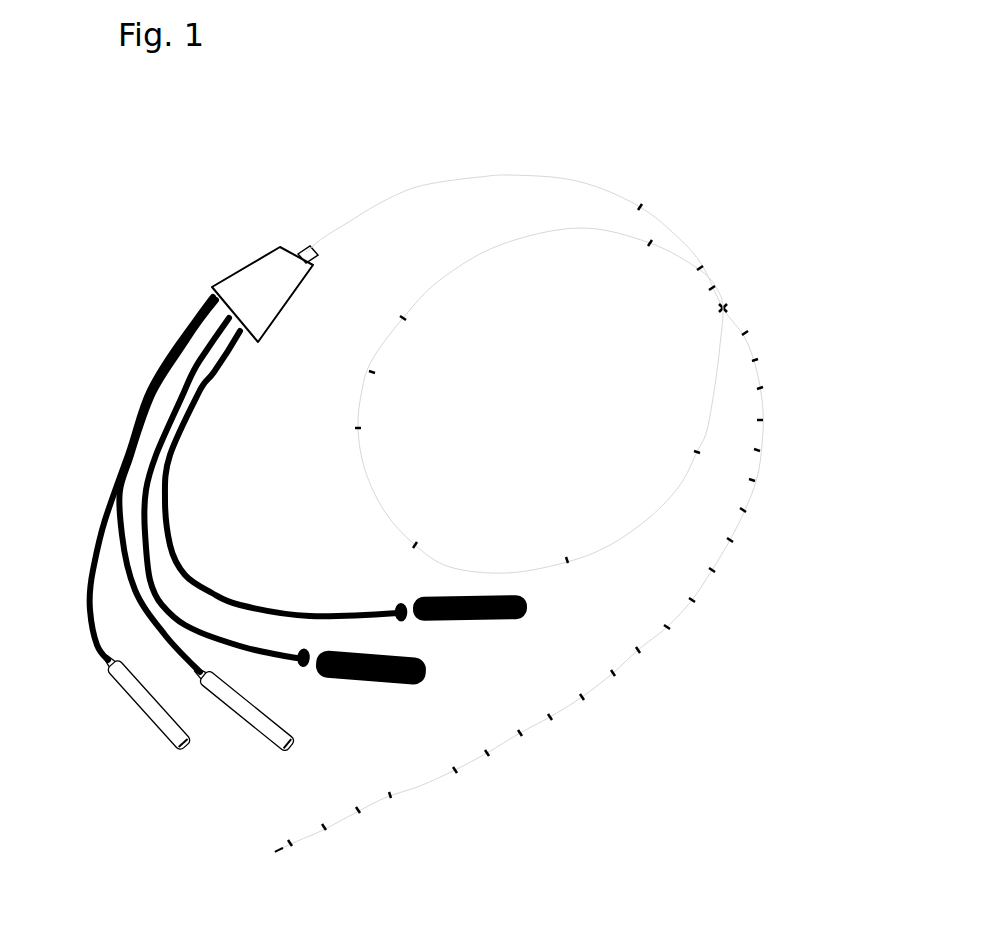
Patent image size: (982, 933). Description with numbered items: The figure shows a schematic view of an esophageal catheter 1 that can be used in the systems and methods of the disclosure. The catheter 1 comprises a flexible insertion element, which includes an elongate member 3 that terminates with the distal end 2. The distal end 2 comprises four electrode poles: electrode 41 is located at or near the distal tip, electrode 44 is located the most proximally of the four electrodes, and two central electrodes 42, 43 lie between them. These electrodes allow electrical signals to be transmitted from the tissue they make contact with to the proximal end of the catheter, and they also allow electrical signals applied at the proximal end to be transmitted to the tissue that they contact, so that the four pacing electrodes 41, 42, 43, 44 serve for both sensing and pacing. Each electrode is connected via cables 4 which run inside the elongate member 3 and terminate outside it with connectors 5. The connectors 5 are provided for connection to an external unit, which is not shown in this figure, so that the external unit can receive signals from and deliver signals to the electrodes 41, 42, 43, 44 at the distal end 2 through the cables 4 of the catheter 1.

The esophageal catheter 1 is at (762, 312).
The distal end 2 is at (245, 852).
The elongate member 3 is at (766, 527).
The cables 4 is at (122, 382).
The connectors 5 is at (210, 741).
The electrode 41 is at (294, 861).
The electrode 42 is at (338, 846).
The electrode 43 is at (376, 830).
The electrode 44 is at (411, 815).